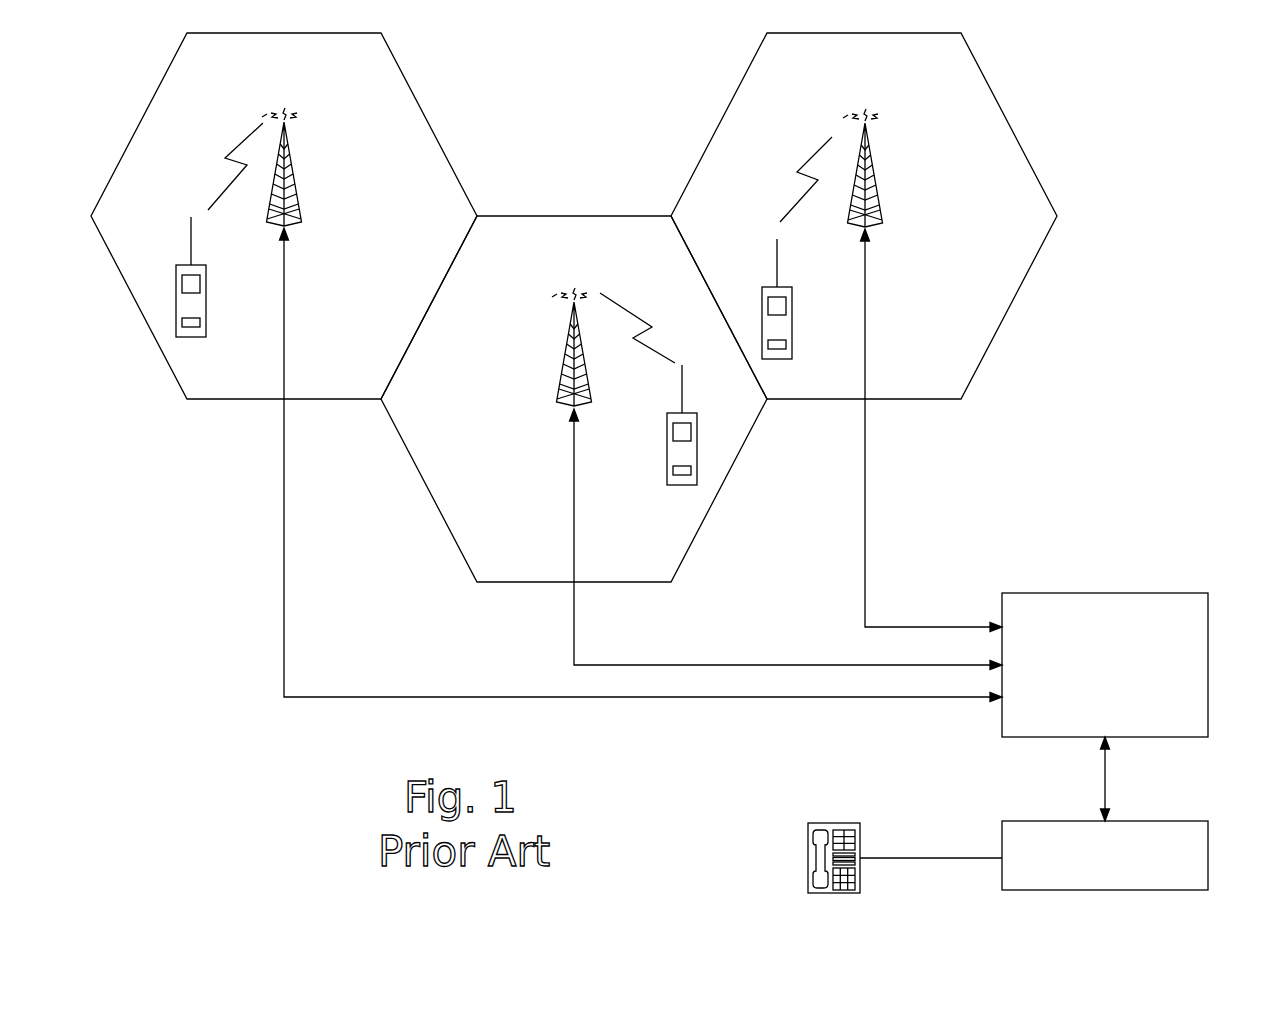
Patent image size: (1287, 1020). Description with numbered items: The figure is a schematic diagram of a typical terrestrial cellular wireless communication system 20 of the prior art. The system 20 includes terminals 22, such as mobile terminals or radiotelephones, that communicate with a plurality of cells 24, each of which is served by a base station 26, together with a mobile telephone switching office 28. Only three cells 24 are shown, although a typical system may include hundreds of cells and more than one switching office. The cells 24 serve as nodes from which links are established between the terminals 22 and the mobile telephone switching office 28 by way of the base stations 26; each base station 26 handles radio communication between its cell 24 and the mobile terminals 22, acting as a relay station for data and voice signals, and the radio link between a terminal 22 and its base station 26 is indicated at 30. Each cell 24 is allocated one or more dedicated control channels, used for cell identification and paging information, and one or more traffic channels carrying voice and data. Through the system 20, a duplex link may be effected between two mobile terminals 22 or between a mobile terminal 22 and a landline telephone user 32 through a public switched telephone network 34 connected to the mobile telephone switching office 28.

The cellular wireless communication system 20 is at (1227, 148).
The terminal 22 is at (207, 308).
The cell 24 is at (184, 402).
The base station 26 is at (307, 167).
The mobile telephone switching office 28 is at (1105, 593).
The radio link 30 is at (217, 160).
The landline telephone user 32 is at (807, 858).
The public switched telephone network 34 is at (1210, 858).